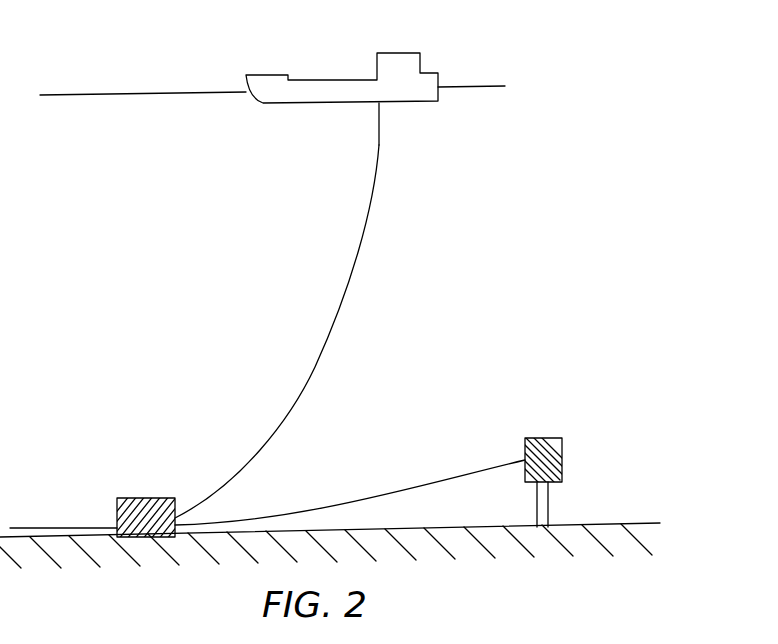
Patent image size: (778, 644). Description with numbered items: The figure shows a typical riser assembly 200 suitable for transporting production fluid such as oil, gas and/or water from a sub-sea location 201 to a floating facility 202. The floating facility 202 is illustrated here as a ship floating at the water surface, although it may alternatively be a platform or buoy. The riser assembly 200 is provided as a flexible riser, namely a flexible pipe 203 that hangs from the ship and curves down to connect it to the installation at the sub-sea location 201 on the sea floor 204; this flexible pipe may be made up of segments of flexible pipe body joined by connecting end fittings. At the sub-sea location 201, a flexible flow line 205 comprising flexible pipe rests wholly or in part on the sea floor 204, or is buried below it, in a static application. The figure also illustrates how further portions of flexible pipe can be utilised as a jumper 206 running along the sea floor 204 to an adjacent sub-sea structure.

The riser assembly 200 is at (393, 177).
The sub-sea location 201 is at (144, 498).
The floating facility 202 is at (263, 74).
The flexible pipe 203 is at (315, 367).
The sea floor 204 is at (615, 523).
The flexible flow line 205 is at (47, 528).
The jumper 206 is at (462, 470).